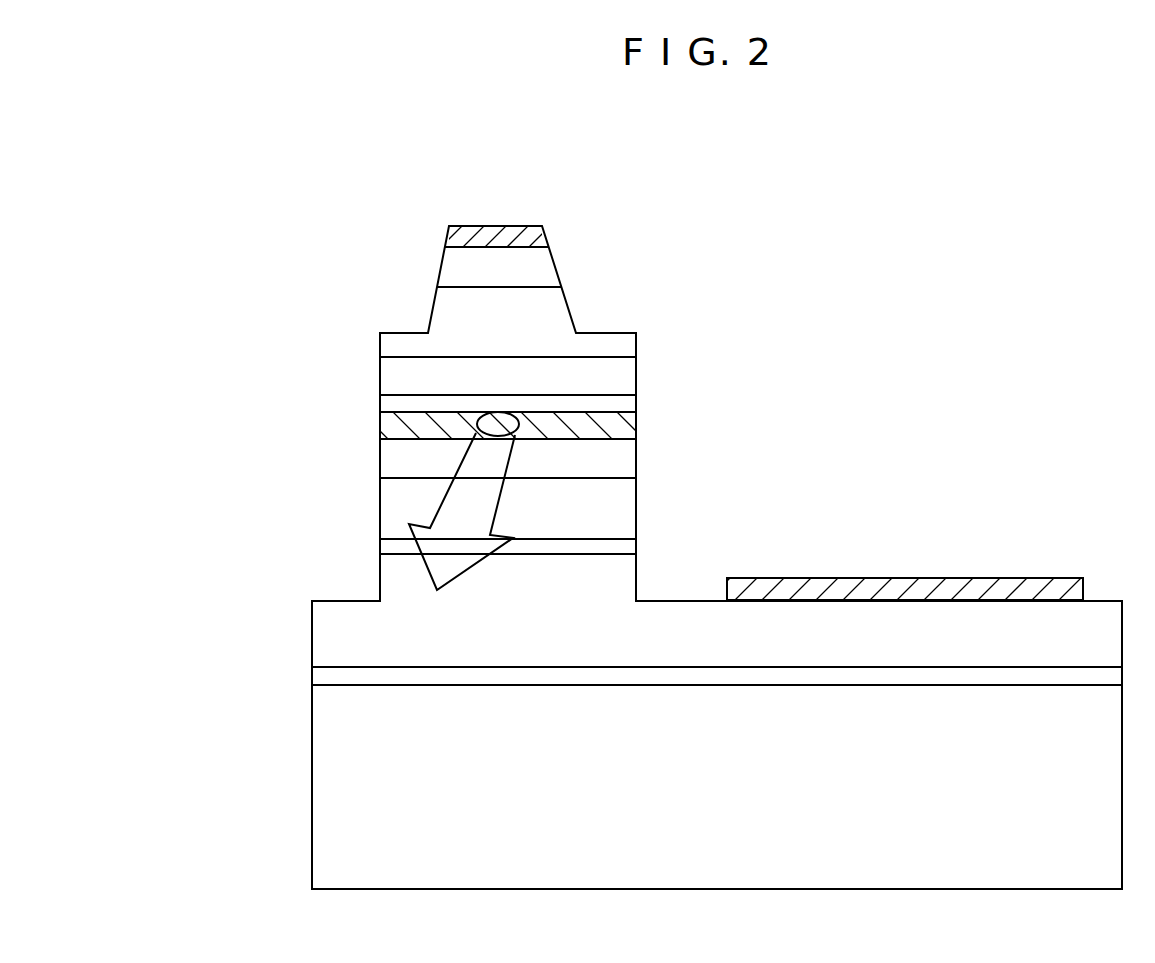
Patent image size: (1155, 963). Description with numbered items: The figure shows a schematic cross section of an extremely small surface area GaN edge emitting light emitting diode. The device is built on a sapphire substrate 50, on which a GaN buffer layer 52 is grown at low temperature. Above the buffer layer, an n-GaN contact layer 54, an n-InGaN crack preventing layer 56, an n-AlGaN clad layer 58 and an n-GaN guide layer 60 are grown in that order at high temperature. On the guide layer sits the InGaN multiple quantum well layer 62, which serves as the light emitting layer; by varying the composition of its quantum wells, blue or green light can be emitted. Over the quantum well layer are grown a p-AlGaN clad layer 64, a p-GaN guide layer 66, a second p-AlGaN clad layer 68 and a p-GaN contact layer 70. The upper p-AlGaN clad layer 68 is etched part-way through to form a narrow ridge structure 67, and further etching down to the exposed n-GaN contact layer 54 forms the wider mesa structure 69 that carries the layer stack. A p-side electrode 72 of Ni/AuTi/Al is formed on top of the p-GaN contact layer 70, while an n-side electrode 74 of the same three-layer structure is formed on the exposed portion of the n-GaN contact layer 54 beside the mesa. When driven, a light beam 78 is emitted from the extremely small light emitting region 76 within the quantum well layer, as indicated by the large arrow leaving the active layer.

The sapphire substrate 50 is at (323, 797).
The GaN buffer layer 52 is at (317, 680).
The n-GaN contact layer 54 is at (323, 638).
The n-InGaN crack preventing layer 56 is at (382, 548).
The n-AlGaN clad layer 58 is at (387, 513).
The n-GaN guide layer 60 is at (383, 457).
The InGaN multiple quantum well layer 62 is at (380, 425).
The p-AlGaN clad layer 64 is at (380, 402).
The p-GaN guide layer 66 is at (378, 370).
The ridge structure 67 is at (591, 256).
The p-AlGaN clad layer 68 is at (403, 333).
The mesa structure 69 is at (661, 373).
The p-GaN contact layer 70 is at (447, 270).
The p-side electrode 72 is at (447, 230).
The n-side electrode 74 is at (800, 598).
The light emitting region 76 is at (519, 423).
The light beam 78 is at (487, 513).